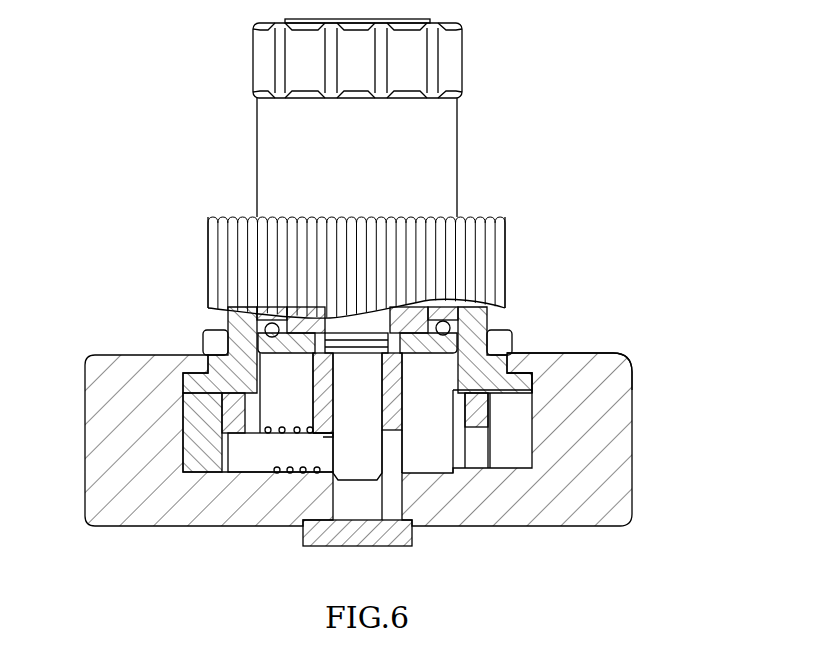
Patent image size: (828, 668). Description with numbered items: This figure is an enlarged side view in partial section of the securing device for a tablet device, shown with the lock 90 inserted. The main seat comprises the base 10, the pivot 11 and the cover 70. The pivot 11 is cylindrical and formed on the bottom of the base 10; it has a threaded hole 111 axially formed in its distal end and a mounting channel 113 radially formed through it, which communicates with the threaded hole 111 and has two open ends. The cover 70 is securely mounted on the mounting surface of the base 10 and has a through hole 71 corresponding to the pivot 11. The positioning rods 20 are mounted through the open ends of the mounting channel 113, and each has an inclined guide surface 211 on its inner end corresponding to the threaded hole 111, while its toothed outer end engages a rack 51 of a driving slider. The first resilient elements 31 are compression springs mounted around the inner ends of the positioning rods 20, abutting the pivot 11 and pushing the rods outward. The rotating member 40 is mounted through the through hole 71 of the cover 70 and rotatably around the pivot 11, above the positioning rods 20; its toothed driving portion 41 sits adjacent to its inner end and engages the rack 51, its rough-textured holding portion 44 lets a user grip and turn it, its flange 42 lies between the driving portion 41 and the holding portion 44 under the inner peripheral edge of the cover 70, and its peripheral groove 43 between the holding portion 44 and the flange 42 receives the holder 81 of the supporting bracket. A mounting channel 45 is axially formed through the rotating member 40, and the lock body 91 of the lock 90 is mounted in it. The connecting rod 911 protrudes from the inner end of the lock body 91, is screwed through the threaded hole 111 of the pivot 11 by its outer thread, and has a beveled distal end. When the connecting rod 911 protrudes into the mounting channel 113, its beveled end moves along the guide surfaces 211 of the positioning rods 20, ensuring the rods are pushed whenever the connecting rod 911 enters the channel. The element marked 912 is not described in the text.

The base 10 is at (618, 496).
The pivot 11 is at (442, 403).
The threaded hole 111 is at (396, 369).
The mounting channel 113 is at (403, 443).
The positioning rod 20 is at (242, 455).
The guide surface 211 is at (327, 435).
The first resilient element 31 is at (298, 428).
The rotating member 40 is at (516, 210).
The driving portion 41 is at (237, 418).
The flange 42 is at (187, 382).
The peripheral groove 43 is at (237, 333).
The holding portion 44 is at (225, 252).
The mounting channel 45 is at (446, 322).
The rack 51 is at (198, 408).
The cover 70 is at (626, 388).
The through hole 71 is at (538, 383).
The holder 81 is at (203, 342).
The lock 90 is at (473, 50).
The lock body 91 is at (278, 143).
The connecting rod 911 is at (370, 467).
The base plate 912 is at (344, 482).